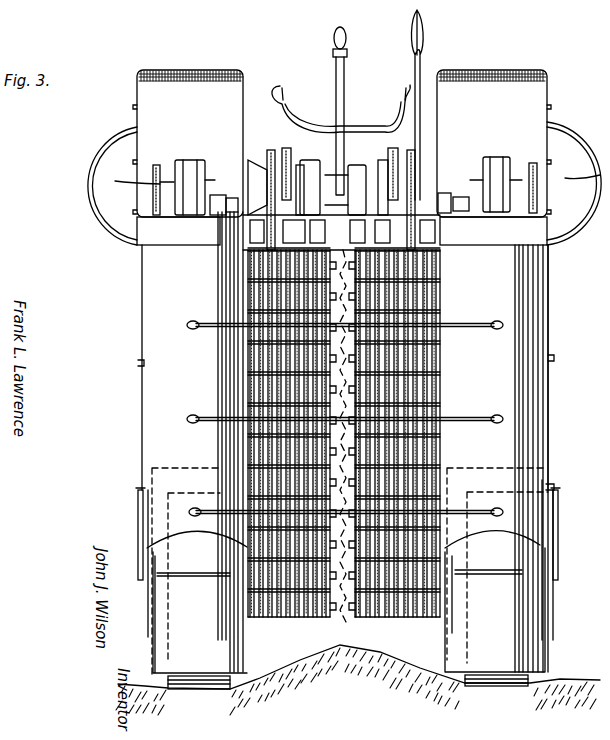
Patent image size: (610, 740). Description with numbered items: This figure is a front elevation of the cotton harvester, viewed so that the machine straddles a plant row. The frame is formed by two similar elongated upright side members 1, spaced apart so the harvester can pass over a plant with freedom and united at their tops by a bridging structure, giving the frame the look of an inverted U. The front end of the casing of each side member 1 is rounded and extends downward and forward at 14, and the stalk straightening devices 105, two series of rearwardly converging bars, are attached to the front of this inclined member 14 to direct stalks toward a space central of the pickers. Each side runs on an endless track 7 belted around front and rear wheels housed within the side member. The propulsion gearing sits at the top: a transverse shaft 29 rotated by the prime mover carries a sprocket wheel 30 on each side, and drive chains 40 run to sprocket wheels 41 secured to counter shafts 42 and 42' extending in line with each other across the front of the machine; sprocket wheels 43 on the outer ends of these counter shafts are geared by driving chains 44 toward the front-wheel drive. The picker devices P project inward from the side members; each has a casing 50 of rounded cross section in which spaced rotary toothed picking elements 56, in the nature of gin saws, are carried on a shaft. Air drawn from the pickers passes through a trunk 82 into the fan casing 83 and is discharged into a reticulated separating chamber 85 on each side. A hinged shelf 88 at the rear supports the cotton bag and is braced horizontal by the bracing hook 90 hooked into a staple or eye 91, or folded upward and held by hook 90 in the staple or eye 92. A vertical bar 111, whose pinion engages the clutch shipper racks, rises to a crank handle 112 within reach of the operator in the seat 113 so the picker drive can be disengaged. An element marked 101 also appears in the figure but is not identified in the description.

The side member 1 is at (140, 430).
The endless track 7 is at (508, 678).
The curved front plate 14 is at (163, 380).
The shaft 29 is at (353, 173).
The sprocket wheel 30 is at (285, 151).
The drive chain 40 is at (273, 227).
The sprocket wheel 41 is at (256, 172).
The counter shaft 42 is at (224, 181).
The counter shaft 42' is at (454, 186).
The sprocket wheel 43 is at (156, 170).
The driving chain 44 is at (160, 170).
The picker casing 50 is at (300, 620).
The rotary toothed picking element 56 is at (277, 618).
The trunk 82 is at (93, 213).
The fan casing 83 is at (230, 100).
The reticulated separating chamber 85 is at (207, 72).
The shelf 88 is at (553, 573).
The bracing hook 90 is at (136, 520).
The staple or eye 91 is at (554, 487).
The staple or eye 92 is at (140, 363).
The hand lever 101 is at (421, 53).
The stalk straightening device 105 is at (465, 413).
The vertical bar 111 is at (343, 73).
The crank handle 112 is at (346, 40).
The seat 113 is at (376, 116).
The picker device P is at (378, 614).